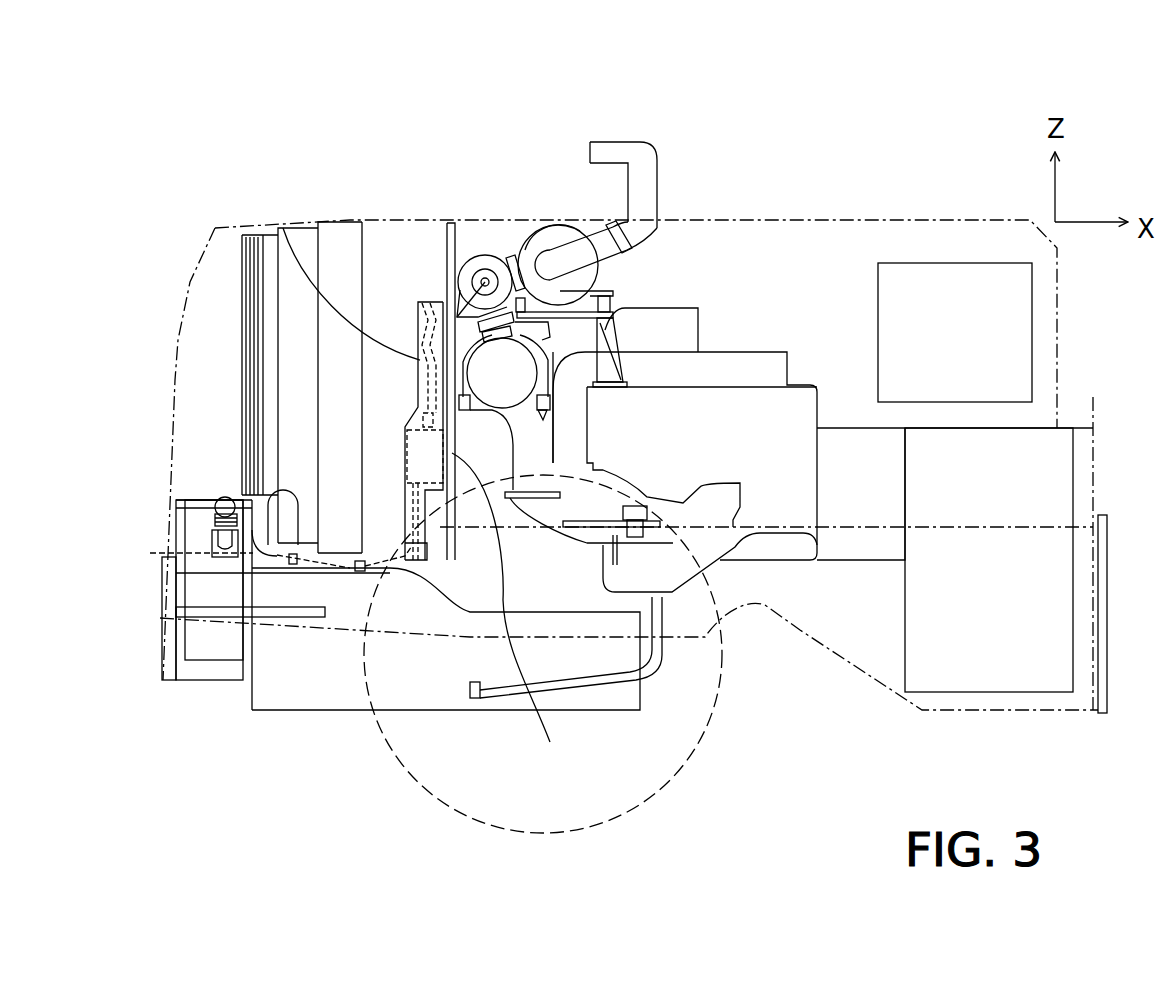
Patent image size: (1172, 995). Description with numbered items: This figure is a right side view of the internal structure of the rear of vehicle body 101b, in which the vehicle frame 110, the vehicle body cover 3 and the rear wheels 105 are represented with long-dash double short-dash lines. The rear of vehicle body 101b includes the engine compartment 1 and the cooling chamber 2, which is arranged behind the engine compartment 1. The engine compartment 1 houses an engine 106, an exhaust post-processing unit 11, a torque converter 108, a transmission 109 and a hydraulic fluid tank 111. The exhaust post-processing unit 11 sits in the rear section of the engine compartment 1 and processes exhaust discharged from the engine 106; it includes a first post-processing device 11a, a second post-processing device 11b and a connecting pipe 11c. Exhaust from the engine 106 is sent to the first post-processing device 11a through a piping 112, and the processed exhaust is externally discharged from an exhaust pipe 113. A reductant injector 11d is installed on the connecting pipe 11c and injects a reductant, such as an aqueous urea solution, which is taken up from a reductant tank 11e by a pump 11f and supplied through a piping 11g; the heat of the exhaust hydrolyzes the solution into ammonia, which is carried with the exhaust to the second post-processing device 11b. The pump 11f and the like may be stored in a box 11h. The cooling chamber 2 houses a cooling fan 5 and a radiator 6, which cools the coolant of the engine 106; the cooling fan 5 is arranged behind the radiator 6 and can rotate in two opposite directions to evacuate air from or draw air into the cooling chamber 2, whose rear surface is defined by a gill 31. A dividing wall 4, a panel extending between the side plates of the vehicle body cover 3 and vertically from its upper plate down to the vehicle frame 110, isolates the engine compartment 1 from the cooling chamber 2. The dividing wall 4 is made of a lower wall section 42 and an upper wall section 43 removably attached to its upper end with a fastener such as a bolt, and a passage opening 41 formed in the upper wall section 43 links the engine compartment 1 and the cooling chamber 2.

The engine compartment 1 is at (834, 240).
The cooling chamber 2 is at (371, 232).
The vehicle body cover 3 is at (1060, 293).
The dividing wall 4 is at (439, 253).
The cooling fan 5 is at (247, 237).
The radiator 6 is at (337, 237).
The exhaust post-processing unit 11 is at (539, 282).
The first post-processing device 11a is at (505, 239).
The second post-processing device 11b is at (547, 255).
The connecting pipe 11c is at (483, 272).
The reductant injector 11d is at (496, 362).
The reductant tank 11e is at (192, 568).
The pump 11f is at (415, 440).
The piping 11g is at (407, 480).
The box 11h is at (405, 428).
The gill 31 is at (175, 412).
The passage opening 41 is at (430, 300).
The lower wall section 42 is at (419, 613).
The upper wall section 43 is at (437, 250).
The rear of vehicle body 101b is at (802, 152).
The rear wheels 105 is at (405, 772).
The engine 106 is at (757, 400).
The torque converter 108 is at (867, 458).
The transmission 109 is at (1010, 543).
The vehicle frame 110 is at (802, 640).
The hydraulic fluid tank 111 is at (960, 290).
The piping 112 is at (613, 323).
The exhaust pipe 113 is at (653, 187).